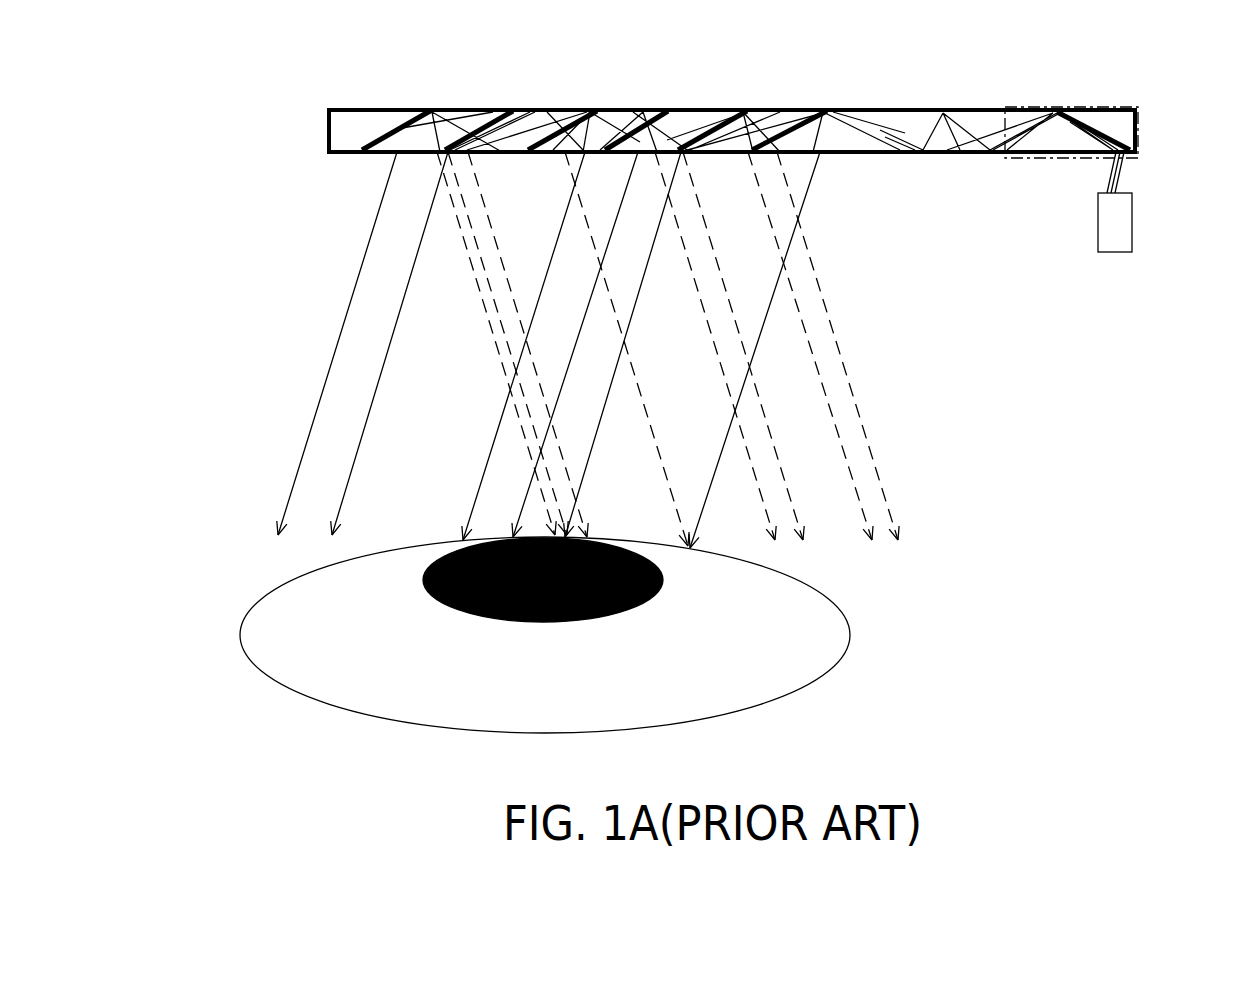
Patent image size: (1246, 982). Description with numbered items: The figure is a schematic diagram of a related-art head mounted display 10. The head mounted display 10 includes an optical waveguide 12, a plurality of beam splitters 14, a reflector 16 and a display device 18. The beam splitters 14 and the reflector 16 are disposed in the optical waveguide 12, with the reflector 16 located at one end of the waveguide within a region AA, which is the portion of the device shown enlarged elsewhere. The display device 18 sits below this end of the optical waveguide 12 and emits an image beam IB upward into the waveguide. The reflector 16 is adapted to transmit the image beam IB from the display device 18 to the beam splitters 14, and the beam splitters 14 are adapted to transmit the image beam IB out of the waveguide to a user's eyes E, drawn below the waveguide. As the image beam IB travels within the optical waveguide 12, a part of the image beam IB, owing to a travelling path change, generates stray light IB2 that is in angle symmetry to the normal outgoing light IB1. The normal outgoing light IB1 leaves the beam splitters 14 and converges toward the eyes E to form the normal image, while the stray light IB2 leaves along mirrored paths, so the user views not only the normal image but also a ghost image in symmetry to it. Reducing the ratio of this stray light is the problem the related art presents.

The head mounted display 10 is at (1115, 282).
The optical waveguide 12 is at (329, 135).
The beam splitters 14 is at (400, 127).
The reflector 16 is at (1097, 132).
The display device 18 is at (1124, 217).
The region AA is at (1100, 107).
The image beam IB is at (1102, 175).
The normal outgoing light IB1 is at (305, 437).
The stray light IB2 is at (875, 452).
The user's eyes E is at (852, 633).